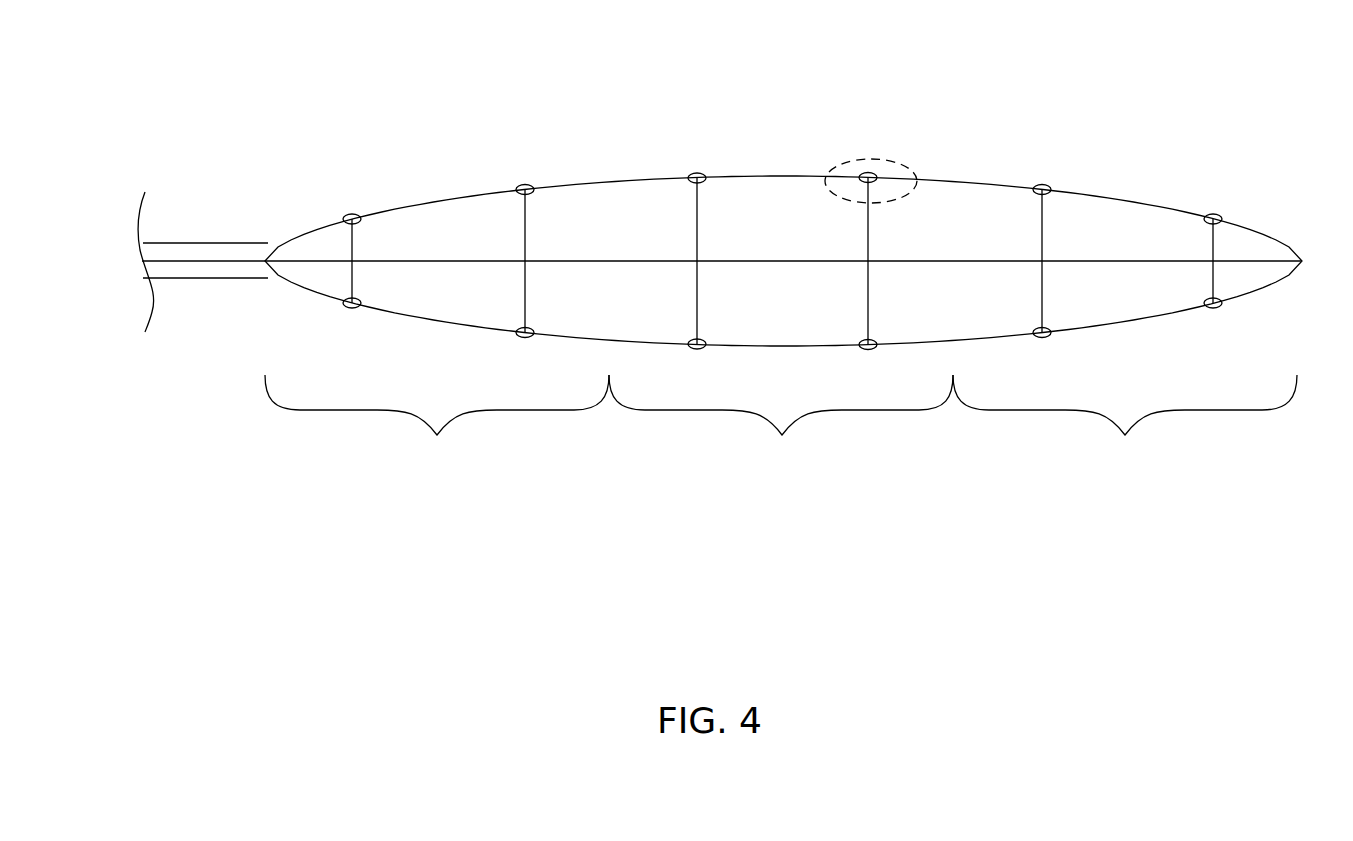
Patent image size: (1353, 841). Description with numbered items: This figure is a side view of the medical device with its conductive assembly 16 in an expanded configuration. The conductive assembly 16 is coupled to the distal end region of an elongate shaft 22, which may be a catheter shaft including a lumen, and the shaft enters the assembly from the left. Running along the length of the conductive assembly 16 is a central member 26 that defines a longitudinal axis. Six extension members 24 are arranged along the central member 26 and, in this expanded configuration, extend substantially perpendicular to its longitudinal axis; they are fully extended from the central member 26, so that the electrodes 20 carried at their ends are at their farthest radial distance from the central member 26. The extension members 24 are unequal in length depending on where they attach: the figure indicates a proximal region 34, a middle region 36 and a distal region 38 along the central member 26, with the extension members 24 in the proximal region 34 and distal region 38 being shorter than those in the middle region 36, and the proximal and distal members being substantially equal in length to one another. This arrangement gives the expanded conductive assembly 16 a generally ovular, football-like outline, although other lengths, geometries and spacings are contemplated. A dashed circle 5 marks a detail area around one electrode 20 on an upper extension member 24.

The conductive assembly 16 is at (1137, 103).
The elongate shaft 22 is at (208, 242).
The central member 26 is at (437, 258).
The extension members 24 is at (525, 226).
The electrodes 20 is at (352, 213).
The detail region of FIG. 5 is at (880, 158).
The proximal region 34 is at (437, 421).
The middle region 36 is at (781, 421).
The distal region 38 is at (1125, 421).